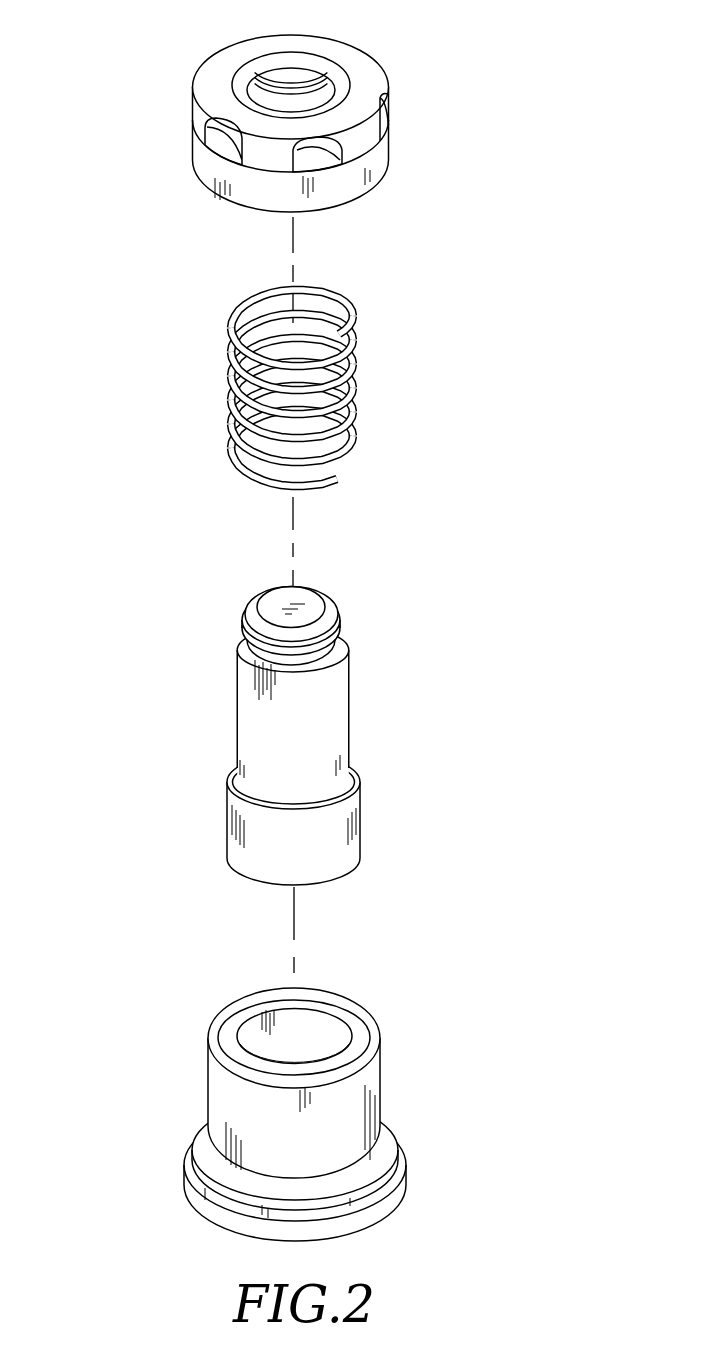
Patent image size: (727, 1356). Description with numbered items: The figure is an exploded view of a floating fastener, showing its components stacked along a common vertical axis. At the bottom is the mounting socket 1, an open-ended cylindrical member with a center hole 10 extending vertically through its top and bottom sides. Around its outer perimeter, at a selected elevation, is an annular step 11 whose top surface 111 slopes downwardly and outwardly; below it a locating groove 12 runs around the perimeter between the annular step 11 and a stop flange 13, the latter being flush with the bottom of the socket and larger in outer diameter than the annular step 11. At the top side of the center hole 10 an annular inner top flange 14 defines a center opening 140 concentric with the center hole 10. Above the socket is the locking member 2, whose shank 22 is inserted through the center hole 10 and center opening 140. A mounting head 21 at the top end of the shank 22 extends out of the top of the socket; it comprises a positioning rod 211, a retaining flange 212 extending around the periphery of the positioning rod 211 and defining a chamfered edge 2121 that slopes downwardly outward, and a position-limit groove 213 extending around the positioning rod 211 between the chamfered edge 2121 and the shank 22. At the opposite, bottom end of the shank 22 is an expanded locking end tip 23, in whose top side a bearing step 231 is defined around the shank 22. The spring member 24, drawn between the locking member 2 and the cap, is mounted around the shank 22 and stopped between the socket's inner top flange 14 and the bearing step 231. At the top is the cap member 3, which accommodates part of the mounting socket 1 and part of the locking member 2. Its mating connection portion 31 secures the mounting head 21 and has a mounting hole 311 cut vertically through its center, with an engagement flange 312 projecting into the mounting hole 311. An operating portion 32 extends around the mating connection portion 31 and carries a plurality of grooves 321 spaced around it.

The mounting socket 1 is at (275, 1116).
The center hole 10 is at (285, 1016).
The annular step 11 is at (218, 1193).
The top surface 111 is at (210, 1162).
The locating groove 12 is at (299, 1186).
The stop flange 13 is at (368, 1218).
The annular inner top flange 14 is at (361, 1022).
The center opening 140 is at (322, 1005).
The locking member 2 is at (335, 725).
The mounting head 21 is at (383, 640).
The positioning rod 211 is at (311, 597).
The chamfered edge 2121 is at (337, 619).
The retaining flange 212 is at (315, 649).
The position-limit groove 213 is at (303, 663).
The shank 22 is at (331, 730).
The expanded locking end tip 23 is at (332, 820).
The bearing step 231 is at (350, 777).
The spring member 24 is at (350, 364).
The cap member 3 is at (288, 106).
The mating connection portion 31 is at (343, 59).
The mounting hole 311 is at (322, 78).
The engagement flange 312 is at (332, 97).
The operating portion 32 is at (368, 150).
The grooves 321 is at (385, 127).